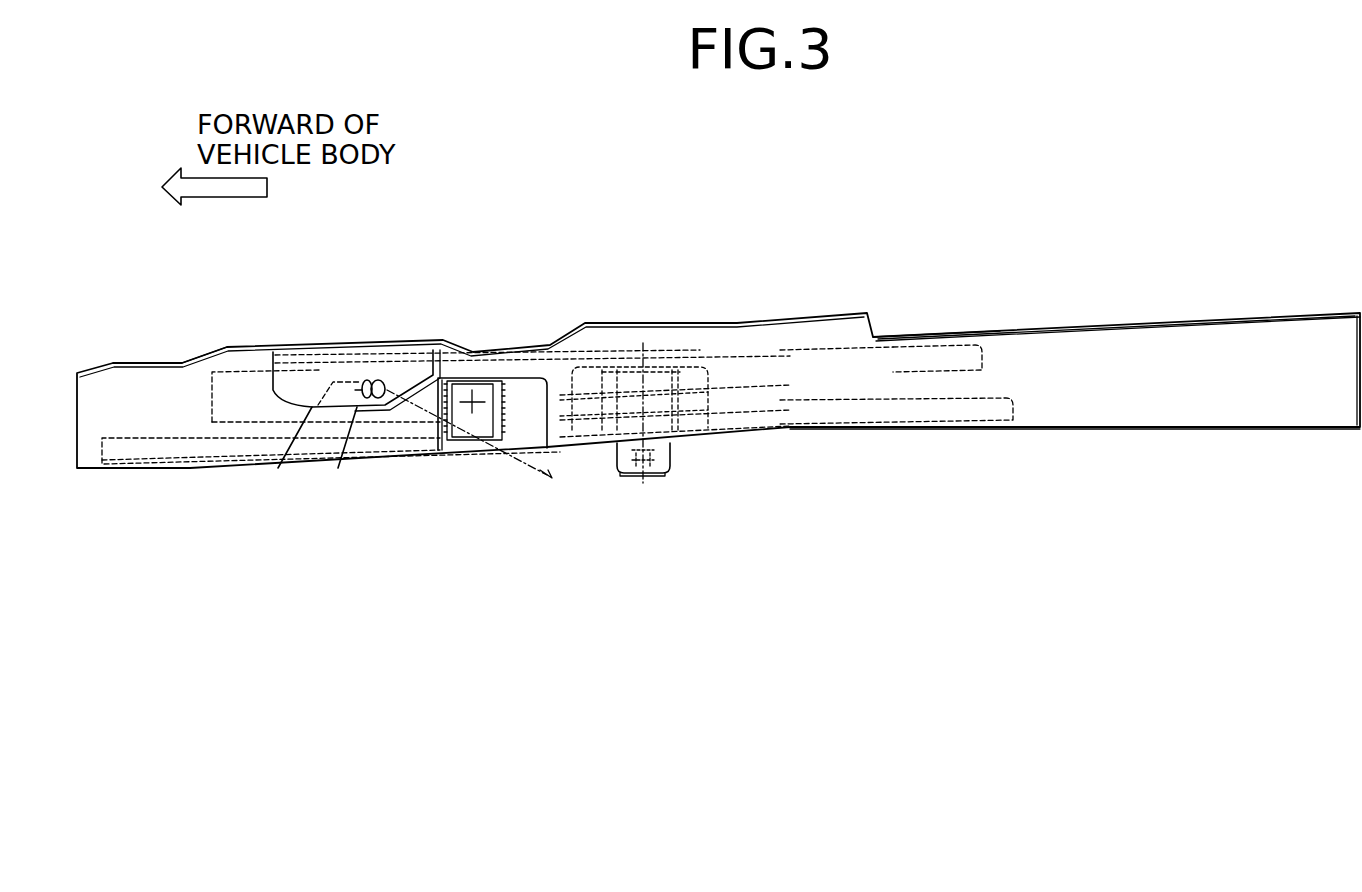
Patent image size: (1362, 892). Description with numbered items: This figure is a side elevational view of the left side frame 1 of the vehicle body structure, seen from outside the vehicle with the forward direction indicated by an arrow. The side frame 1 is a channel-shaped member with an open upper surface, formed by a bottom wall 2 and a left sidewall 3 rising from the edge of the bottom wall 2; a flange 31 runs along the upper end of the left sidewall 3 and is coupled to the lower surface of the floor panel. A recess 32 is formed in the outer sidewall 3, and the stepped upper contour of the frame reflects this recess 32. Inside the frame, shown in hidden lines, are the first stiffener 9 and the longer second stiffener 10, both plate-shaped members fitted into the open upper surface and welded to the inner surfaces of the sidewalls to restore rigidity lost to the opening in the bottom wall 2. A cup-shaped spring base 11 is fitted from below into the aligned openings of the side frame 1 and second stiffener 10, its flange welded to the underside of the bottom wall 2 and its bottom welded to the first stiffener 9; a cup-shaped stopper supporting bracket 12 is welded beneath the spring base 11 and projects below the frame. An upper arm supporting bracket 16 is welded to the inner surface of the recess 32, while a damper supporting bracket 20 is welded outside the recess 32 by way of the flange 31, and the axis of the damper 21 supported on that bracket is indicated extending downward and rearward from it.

The side frame 1 is at (990, 326).
The bottom wall 2 is at (1117, 430).
The left sidewall 3 is at (1142, 342).
The flange 31 is at (1092, 272).
The recess 32 is at (313, 452).
The first stiffener 9 is at (896, 345).
The second stiffener 10 is at (932, 425).
The spring base 11 is at (590, 447).
The stopper supporting bracket 12 is at (668, 457).
The upper arm supporting bracket 16 is at (447, 450).
The damper supporting bracket 20 is at (306, 375).
The damper 21 is at (520, 467).